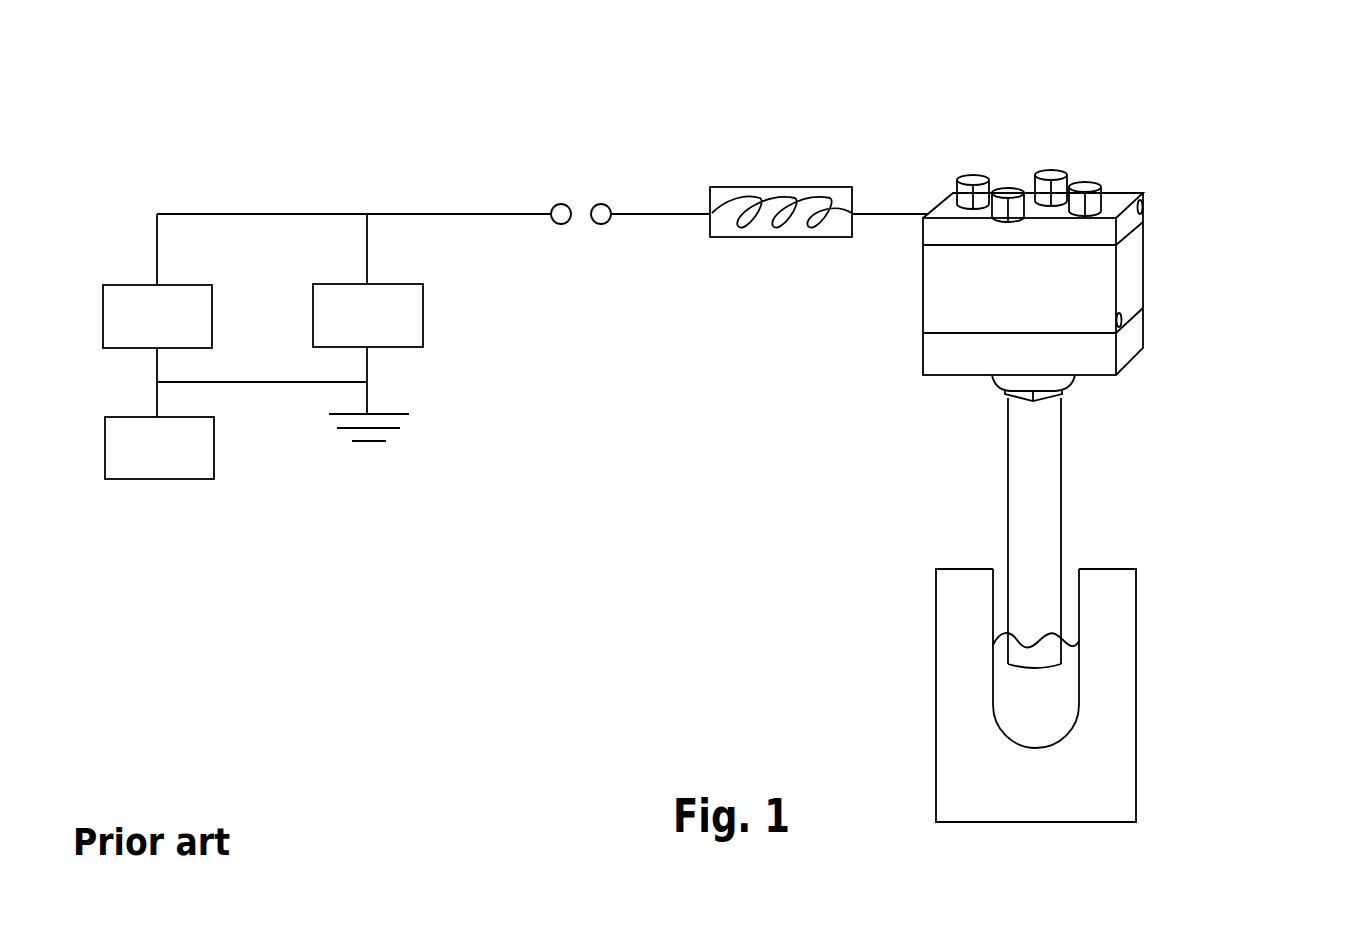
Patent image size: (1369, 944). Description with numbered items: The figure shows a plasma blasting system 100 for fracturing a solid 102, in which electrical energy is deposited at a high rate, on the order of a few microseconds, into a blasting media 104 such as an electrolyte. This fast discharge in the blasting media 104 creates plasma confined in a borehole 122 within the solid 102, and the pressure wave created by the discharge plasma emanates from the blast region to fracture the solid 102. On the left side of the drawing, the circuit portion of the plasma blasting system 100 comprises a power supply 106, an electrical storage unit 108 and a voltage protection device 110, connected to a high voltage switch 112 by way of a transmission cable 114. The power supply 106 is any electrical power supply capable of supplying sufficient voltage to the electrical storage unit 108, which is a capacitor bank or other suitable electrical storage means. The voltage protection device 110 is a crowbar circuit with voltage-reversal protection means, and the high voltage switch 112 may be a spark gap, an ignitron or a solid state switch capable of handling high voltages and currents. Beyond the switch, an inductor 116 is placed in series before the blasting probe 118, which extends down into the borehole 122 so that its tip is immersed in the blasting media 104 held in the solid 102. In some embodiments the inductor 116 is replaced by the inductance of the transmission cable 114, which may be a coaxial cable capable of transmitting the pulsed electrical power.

The plasma blasting system 100 is at (237, 66).
The solid 102 is at (1121, 788).
The blasting media 104 is at (1061, 703).
The power supply 106 is at (159, 448).
The electrical storage unit 108 is at (368, 362).
The voltage protection device 110 is at (157, 316).
The high voltage switch 112 is at (583, 185).
The transmission cable 114 is at (458, 212).
The inductor 116 is at (787, 187).
The blasting probe 118 is at (1208, 195).
The borehole 122 is at (1002, 608).